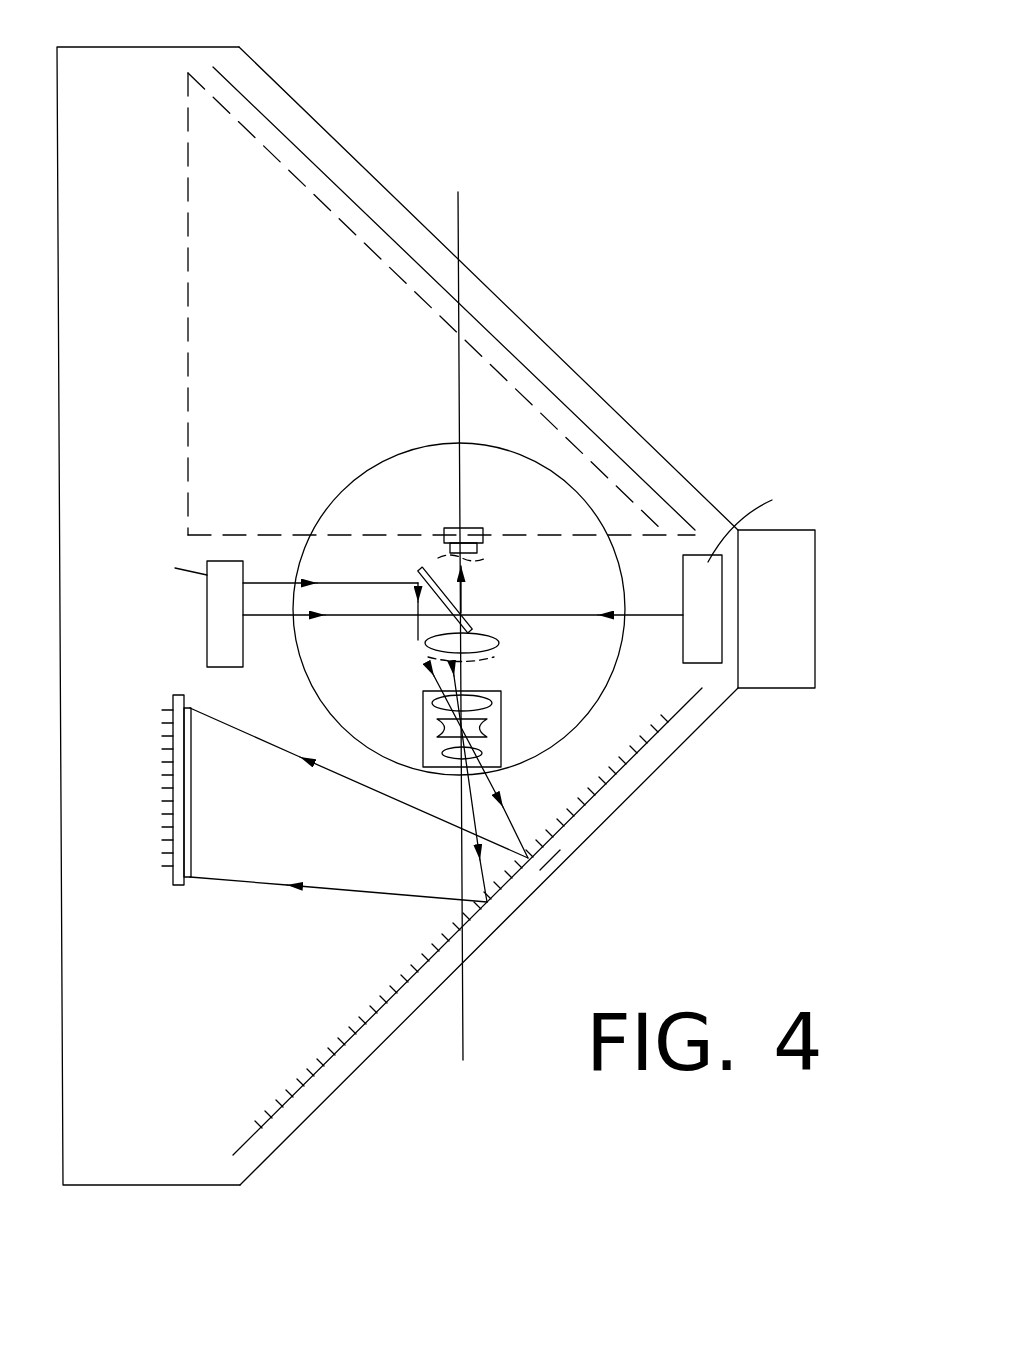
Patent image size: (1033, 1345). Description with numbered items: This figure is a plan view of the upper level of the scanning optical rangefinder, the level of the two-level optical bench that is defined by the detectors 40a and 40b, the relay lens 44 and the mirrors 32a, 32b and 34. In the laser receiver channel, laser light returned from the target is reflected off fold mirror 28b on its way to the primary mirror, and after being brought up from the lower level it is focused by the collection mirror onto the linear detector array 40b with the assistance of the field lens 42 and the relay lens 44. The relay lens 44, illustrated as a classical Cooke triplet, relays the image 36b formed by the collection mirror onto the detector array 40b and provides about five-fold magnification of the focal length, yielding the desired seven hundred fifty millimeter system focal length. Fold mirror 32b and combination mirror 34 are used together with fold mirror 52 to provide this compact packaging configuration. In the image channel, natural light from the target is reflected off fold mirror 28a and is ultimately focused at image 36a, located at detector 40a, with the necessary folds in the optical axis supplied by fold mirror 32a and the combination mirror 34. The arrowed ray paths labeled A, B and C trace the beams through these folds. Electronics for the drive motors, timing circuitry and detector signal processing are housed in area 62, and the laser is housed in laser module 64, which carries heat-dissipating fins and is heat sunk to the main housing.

The electronics area 62 is at (218, 98).
The fold mirror 28b is at (502, 343).
The fold mirror 28a is at (400, 1012).
The fold mirror 32a is at (700, 665).
The fold mirror 32b is at (218, 665).
The combination mirror 34 is at (419, 570).
The image 36a is at (470, 556).
The image 36b is at (490, 660).
The detector 40a is at (468, 525).
The linear detector array 40b is at (165, 790).
The field lens 42 is at (498, 643).
The relay lens 44 is at (503, 720).
The fold mirror 52 is at (545, 885).
The laser module 64 is at (815, 688).
The light beam A is at (373, 613).
The light beam B is at (641, 615).
The light beam C is at (368, 583).